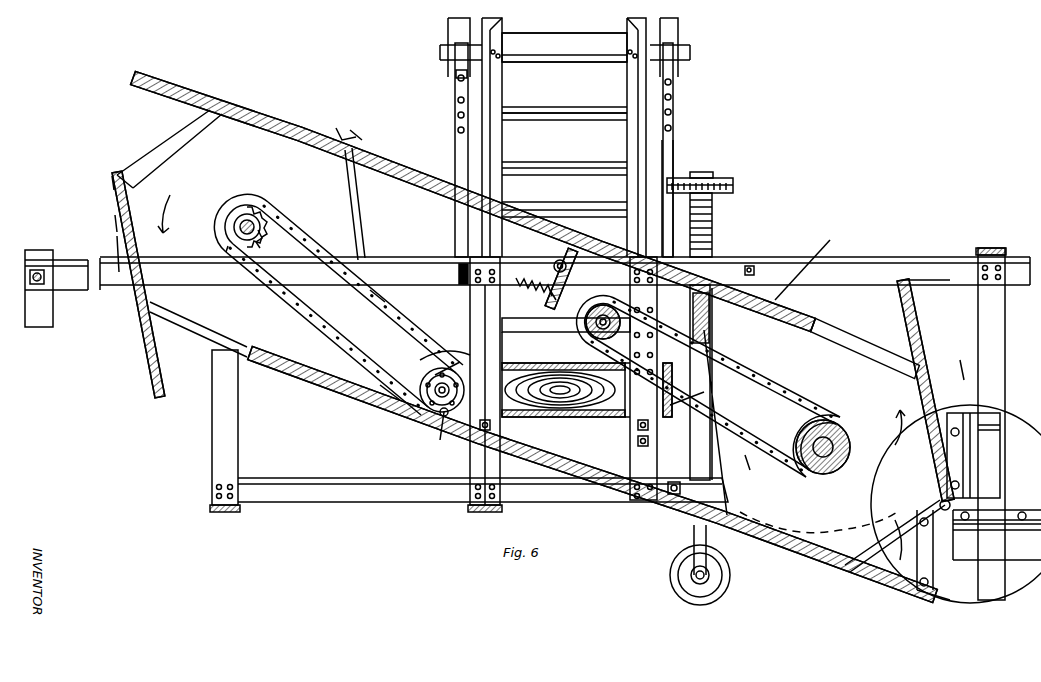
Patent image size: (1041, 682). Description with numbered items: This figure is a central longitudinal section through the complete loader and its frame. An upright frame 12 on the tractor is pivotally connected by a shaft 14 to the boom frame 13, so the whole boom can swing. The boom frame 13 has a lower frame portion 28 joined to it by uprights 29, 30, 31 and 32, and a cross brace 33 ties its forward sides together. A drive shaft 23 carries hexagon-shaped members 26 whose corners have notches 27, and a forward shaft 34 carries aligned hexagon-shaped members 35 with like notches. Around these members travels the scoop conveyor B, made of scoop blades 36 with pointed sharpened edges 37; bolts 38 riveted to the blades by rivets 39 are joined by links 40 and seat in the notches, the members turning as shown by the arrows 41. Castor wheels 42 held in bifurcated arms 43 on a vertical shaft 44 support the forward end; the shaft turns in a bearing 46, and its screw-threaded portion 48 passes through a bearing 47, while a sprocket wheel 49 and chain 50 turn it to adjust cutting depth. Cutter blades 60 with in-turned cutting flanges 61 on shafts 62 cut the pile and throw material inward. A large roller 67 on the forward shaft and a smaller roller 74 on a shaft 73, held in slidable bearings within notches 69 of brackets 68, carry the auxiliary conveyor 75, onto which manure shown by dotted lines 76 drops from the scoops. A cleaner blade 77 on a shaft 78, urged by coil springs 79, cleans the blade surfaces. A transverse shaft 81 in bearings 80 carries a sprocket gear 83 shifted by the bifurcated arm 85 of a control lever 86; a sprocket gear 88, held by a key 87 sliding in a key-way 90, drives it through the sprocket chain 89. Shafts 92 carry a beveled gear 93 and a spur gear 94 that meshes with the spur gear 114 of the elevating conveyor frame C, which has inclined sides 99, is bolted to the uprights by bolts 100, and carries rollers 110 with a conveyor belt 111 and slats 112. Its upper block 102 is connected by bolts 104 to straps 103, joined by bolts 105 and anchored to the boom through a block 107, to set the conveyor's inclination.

The upright frame 12 is at (39, 288).
The boom frame 13 is at (527, 273).
The shaft 14 is at (30, 277).
The drive shaft 23 is at (262, 221).
The hexagon-shaped members 26 is at (241, 185).
The notches 27 is at (355, 270).
The lower frame portion 28 is at (483, 490).
The upright 29 is at (240, 427).
The upright 30 is at (485, 384).
The upright 31 is at (643, 378).
The upright 32 is at (991, 427).
The cross brace 33 is at (978, 250).
The shaft 34 is at (830, 470).
The hexagon-shaped members 35 is at (725, 400).
The scoop blades 36 is at (335, 140).
The pointed sharpened edge 37 is at (160, 400).
The bolts 38 is at (358, 139).
The rivets 39 is at (268, 352).
The links 40 is at (534, 340).
The arrows 41 is at (532, 313).
The castor wheels 42 is at (718, 582).
The bifurcated arms 43 is at (690, 544).
The vertical shaft 44 is at (710, 546).
The bearing 46 is at (740, 508).
The bearing 47 is at (755, 272).
The screw-threaded portion 48 is at (715, 222).
The sprocket wheel 49 is at (728, 178).
The chain 50 is at (735, 188).
The cutter blade 60 is at (956, 504).
The in-turned cutting flanges 61 is at (997, 535).
The shafts 62 is at (952, 505).
The roller 67 is at (845, 410).
The brackets 68 is at (588, 348).
The notches 69 is at (594, 316).
The shaft 73 is at (598, 328).
The roller 74 is at (608, 327).
The auxiliary conveyor 75 is at (750, 455).
The dotted lines 76 is at (905, 505).
The cleaner blade 77 is at (566, 292).
The shaft 78 is at (566, 277).
The coil springs 79 is at (529, 293).
The bearings 80 is at (463, 363).
The transverse shaft 81 is at (450, 352).
The sprocket gear 83 is at (430, 378).
The bifurcated arm 85 is at (420, 395).
The control lever 86 is at (452, 388).
The key 87 is at (250, 222).
The sprocket gear 88 is at (265, 256).
The sprocket chain 89 is at (395, 308).
The key-way 90 is at (222, 258).
The shafts 92 is at (627, 390).
The beveled gear 93 is at (437, 430).
The spur gear 94 is at (704, 392).
The inclined sides 99 is at (585, 152).
The bolts 100 is at (492, 425).
The block 102 is at (455, 34).
The straps 103 is at (675, 164).
The bolts 104 is at (455, 77).
The bolts 105 is at (675, 108).
The block 107 is at (455, 287).
The roller 110 is at (560, 410).
The conveyor belt 111 is at (564, 219).
The slats 112 is at (560, 58).
The spur gear 114 is at (672, 380).
The scoop conveyor B is at (806, 263).
The elevating conveyor frame C is at (640, 140).